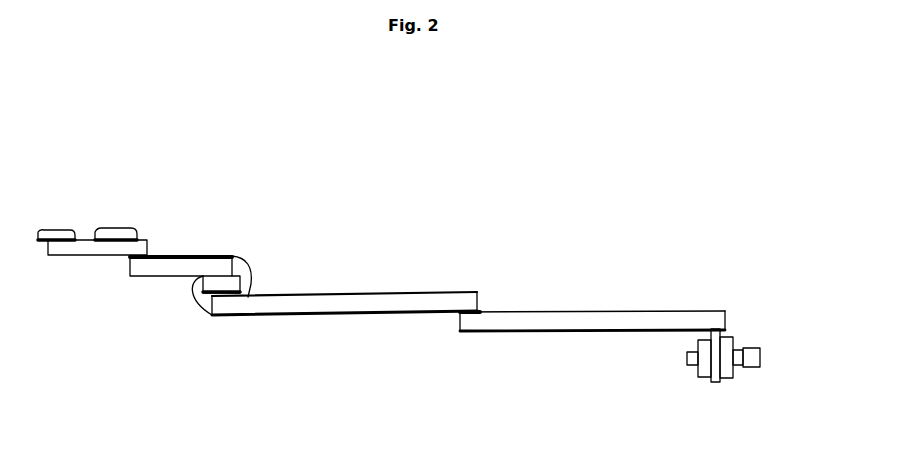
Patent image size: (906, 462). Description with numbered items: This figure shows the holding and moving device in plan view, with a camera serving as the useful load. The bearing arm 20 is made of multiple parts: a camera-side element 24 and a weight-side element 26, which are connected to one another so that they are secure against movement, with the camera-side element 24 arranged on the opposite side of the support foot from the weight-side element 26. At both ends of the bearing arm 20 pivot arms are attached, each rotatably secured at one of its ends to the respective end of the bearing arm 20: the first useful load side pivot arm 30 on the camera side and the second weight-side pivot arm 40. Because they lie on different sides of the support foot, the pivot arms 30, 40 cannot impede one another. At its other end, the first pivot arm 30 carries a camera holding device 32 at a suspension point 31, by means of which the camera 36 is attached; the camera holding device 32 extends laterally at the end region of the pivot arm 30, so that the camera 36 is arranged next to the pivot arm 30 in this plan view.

The bearing arm 20 is at (278, 219).
The camera-side element 24 is at (333, 297).
The weight-side element 26 is at (167, 272).
The first useful load side pivot arm 30 is at (577, 315).
The suspension point 31 is at (727, 338).
The camera holding device 32 is at (716, 382).
The camera 36 is at (703, 374).
The second weight-side pivot arm 40 is at (85, 255).